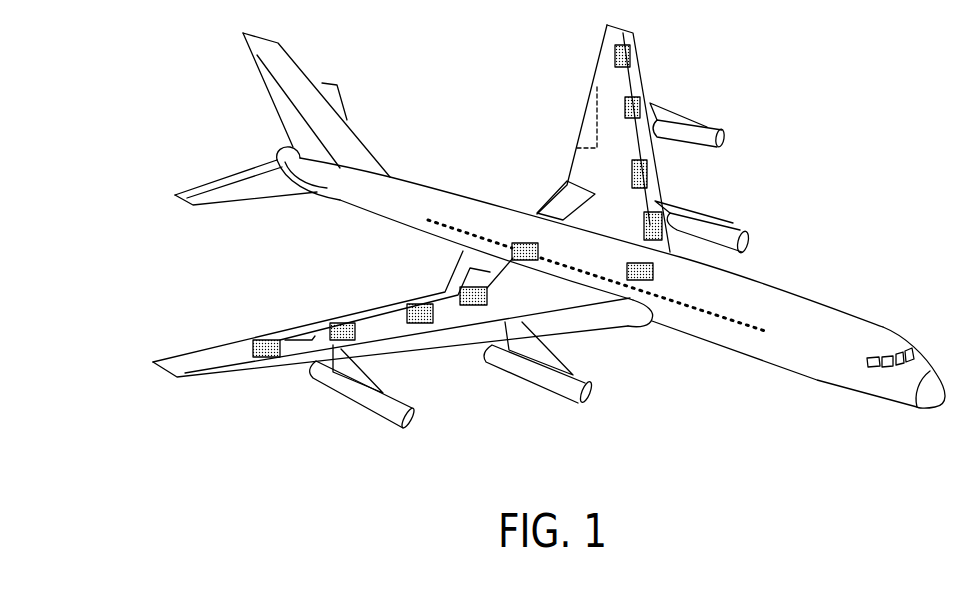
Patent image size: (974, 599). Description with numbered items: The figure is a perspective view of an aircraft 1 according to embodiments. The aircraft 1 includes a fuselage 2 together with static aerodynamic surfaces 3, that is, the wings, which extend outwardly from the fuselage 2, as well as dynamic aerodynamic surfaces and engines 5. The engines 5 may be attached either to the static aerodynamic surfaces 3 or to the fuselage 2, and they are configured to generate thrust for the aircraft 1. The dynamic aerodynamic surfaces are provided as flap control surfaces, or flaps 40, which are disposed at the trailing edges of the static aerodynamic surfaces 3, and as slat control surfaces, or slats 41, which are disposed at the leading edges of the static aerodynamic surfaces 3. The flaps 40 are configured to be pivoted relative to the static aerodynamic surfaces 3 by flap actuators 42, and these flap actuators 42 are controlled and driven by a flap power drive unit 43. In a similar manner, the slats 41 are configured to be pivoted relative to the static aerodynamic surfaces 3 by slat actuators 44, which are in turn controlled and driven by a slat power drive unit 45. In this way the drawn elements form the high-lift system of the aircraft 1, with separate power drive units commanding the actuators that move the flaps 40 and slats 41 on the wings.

The aircraft 1 is at (549, 251).
The fuselage 2 is at (767, 290).
The static aerodynamic surfaces 3 is at (607, 73).
The engines 5 is at (420, 420).
The flap control surfaces 40 is at (324, 326).
The slat control surfaces 41 is at (657, 173).
The flap actuators 42 is at (404, 303).
The flap power drive unit 43 is at (512, 252).
The slat actuators 44 is at (632, 165).
The slat power drive unit 45 is at (560, 220).